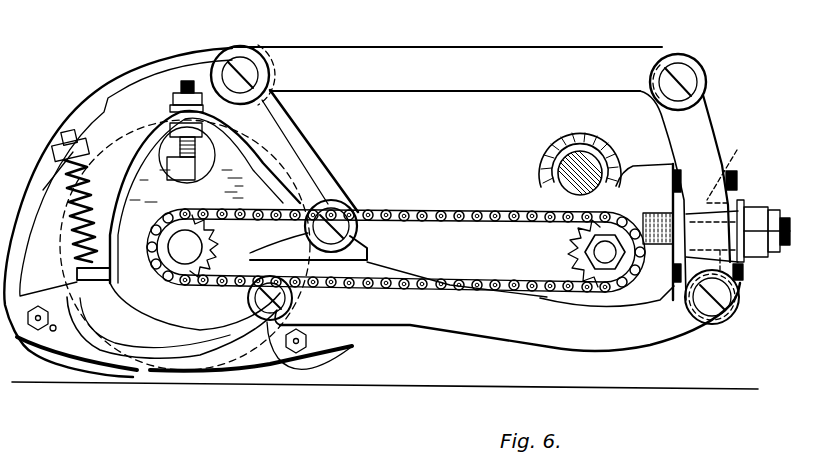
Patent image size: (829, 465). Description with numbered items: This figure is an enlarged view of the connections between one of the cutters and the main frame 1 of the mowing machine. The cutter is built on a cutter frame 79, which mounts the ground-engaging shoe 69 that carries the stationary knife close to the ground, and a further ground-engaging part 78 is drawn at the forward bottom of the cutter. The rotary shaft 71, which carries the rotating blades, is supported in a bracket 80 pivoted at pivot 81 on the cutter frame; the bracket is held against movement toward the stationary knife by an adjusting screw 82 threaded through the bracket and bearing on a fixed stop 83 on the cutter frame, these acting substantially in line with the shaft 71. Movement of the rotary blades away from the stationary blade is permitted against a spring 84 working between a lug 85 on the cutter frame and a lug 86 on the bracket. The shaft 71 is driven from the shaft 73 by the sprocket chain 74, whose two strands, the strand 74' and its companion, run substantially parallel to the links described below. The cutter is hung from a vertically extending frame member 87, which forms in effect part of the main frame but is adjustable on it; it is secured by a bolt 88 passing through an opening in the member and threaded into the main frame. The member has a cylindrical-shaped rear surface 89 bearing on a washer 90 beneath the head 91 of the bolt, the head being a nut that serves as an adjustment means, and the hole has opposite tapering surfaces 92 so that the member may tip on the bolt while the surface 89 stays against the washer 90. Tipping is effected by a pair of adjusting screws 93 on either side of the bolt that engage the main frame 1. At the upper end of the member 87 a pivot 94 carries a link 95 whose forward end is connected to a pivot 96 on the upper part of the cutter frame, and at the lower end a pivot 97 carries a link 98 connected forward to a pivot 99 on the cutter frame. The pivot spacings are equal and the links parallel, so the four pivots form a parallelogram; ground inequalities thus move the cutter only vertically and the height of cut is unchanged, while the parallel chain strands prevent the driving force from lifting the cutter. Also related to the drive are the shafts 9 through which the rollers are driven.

The main frame 1 is at (637, 172).
The shafts 9 is at (563, 165).
The ground-engaging shoe 69 is at (283, 376).
The rotary shaft 71 is at (183, 252).
The shaft 73 is at (603, 258).
The sprocket chain 74 is at (396, 233).
The strand of sprocket chain 74' is at (395, 267).
The front skid runner 78 is at (82, 363).
The cutter frame 79 is at (285, 142).
The bracket 80 is at (250, 193).
The pivot 81 is at (343, 205).
The adjusting screw 82 is at (188, 82).
The fixed stop 83 is at (173, 163).
The spring 84 is at (110, 177).
The lug 85 is at (80, 140).
The lug 86 is at (77, 271).
The vertically extending frame member 87 is at (697, 117).
The bolt 88 is at (683, 220).
The cylindrical-shaped rear surface 89 is at (727, 203).
The washer 90 is at (744, 208).
The head of the bolt 91 is at (750, 240).
The tapering surfaces 92 is at (757, 303).
The adjusting screws 93 is at (676, 170).
The pivot 94 is at (680, 66).
The link 95 is at (443, 60).
The pivot 96 is at (245, 60).
The pivot 97 is at (722, 308).
The link 98 is at (483, 315).
The pivot 99 is at (293, 297).